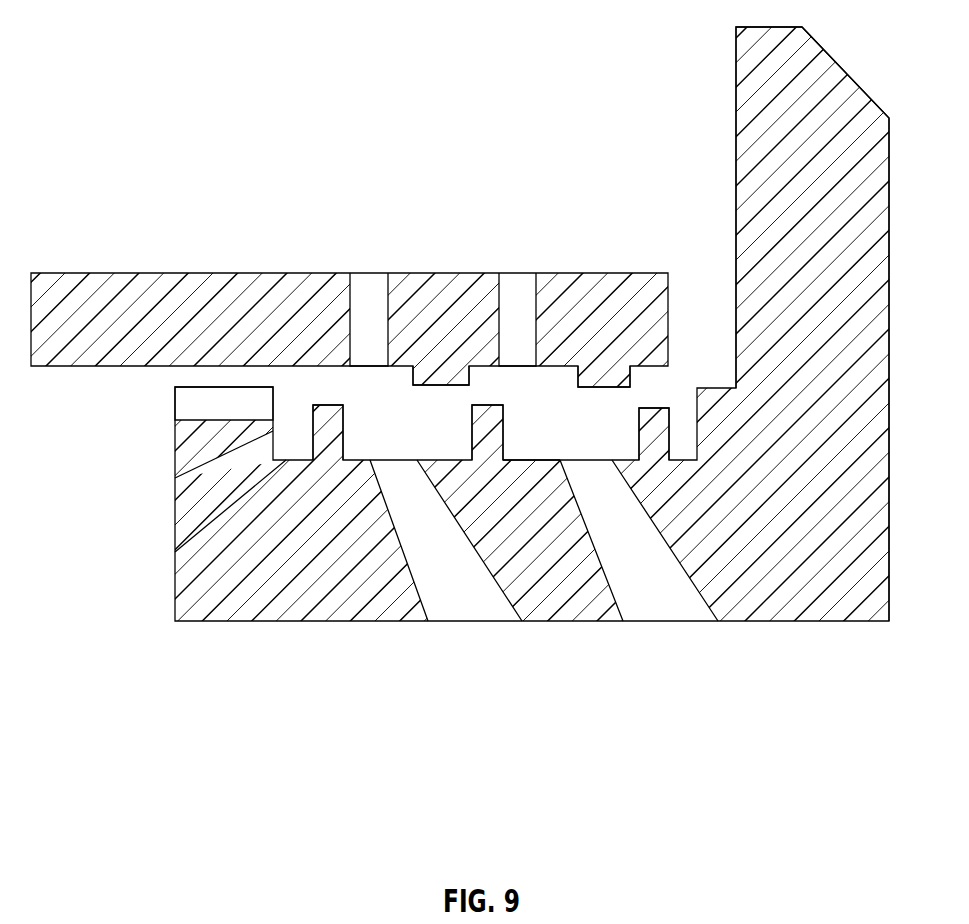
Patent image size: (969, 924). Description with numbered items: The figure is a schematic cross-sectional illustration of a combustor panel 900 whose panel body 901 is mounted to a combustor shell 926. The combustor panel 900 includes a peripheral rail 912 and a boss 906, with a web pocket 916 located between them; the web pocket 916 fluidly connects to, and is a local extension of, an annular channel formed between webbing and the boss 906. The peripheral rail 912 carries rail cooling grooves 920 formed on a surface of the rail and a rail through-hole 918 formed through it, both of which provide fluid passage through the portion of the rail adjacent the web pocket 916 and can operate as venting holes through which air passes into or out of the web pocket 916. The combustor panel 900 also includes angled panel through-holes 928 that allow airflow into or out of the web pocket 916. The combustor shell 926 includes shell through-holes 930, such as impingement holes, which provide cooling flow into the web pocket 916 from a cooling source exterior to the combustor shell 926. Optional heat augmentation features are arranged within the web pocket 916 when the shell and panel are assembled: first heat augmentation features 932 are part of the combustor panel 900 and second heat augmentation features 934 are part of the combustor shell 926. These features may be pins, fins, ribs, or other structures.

The combustor panel 900 is at (484, 462).
The panel body 901 is at (377, 602).
The boss 906 is at (878, 252).
The peripheral rail 912 is at (187, 436).
The web pocket 916 is at (544, 441).
The rail through-hole 918 is at (194, 507).
The rail cooling groove 920 is at (197, 410).
The combustor shell 926 is at (148, 292).
The panel through-holes 928 is at (458, 597).
The shell through-holes 930 is at (369, 294).
The first heat augmentation features 932 is at (490, 443).
The second heat augmentation features 934 is at (450, 383).